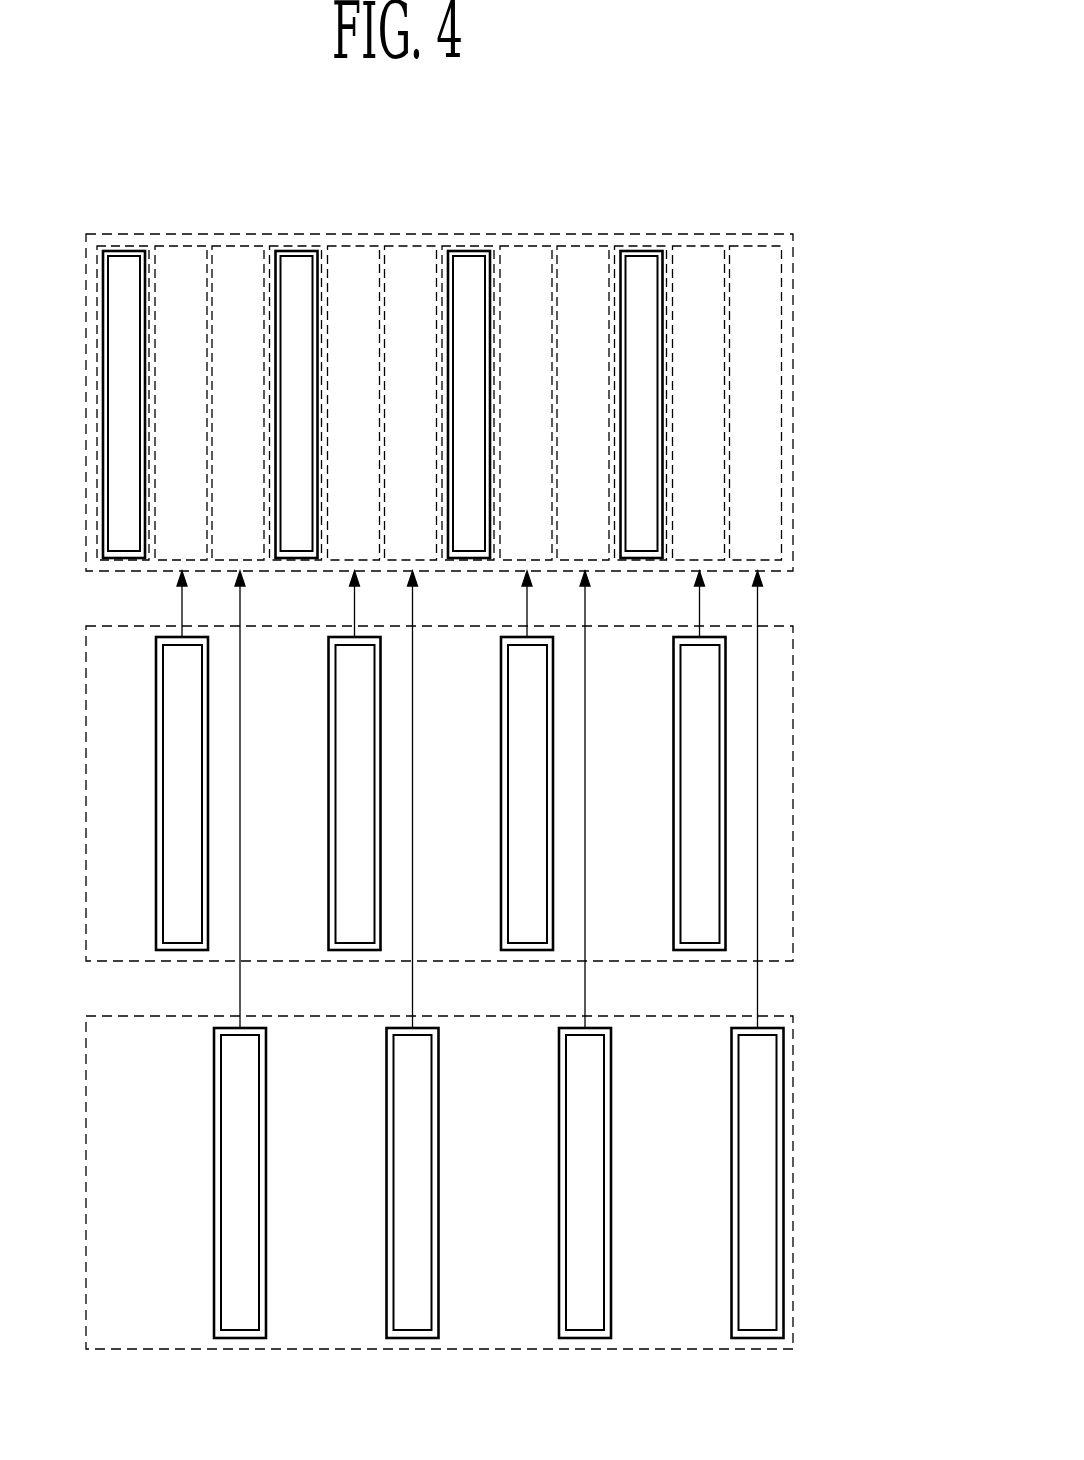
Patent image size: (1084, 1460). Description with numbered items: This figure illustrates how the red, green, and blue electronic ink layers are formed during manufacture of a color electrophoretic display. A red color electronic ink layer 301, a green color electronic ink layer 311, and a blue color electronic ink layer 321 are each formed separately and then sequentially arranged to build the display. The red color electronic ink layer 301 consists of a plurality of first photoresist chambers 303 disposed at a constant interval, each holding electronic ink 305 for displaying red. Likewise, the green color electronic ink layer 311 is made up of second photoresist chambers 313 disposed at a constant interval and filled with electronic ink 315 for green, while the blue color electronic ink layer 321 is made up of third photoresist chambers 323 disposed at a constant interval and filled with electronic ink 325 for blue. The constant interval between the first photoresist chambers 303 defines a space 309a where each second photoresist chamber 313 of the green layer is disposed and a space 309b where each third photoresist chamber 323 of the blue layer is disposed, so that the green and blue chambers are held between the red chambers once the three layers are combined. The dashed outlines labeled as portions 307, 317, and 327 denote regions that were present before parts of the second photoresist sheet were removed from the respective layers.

The red color electronic ink layer 301 is at (509, 364).
The first photoresist chamber 303 is at (642, 256).
The electronic ink 305 is at (632, 251).
The portion of second photoresist sheet 307 is at (793, 370).
The space 309a is at (688, 246).
The space 309b is at (747, 246).
The green color electronic ink layer 311 is at (509, 793).
The second photoresist chamber 313 is at (725, 678).
The electronic ink 315 is at (710, 725).
The portion of second photoresist sheet 317 is at (795, 783).
The blue color electronic ink layer 321 is at (509, 1182).
The third photoresist chamber 323 is at (780, 1067).
The electronic ink 325 is at (760, 1113).
The portion of second photoresist sheet 327 is at (795, 1172).